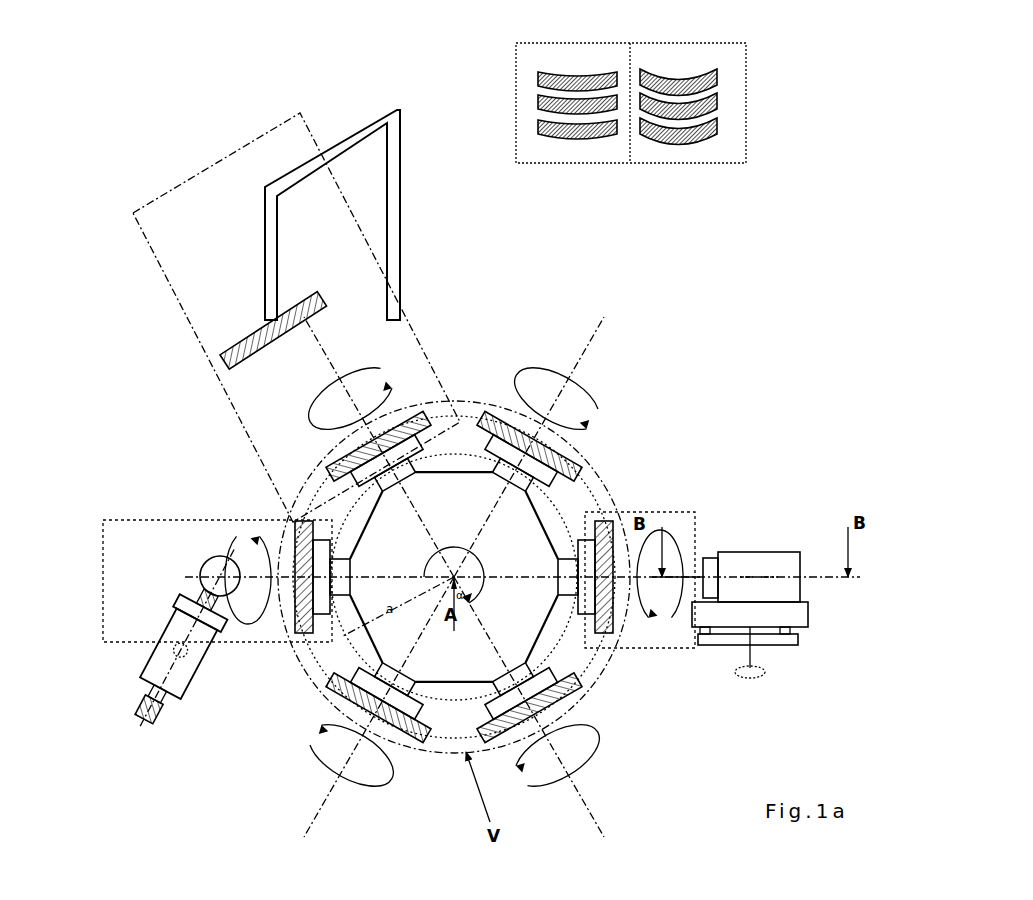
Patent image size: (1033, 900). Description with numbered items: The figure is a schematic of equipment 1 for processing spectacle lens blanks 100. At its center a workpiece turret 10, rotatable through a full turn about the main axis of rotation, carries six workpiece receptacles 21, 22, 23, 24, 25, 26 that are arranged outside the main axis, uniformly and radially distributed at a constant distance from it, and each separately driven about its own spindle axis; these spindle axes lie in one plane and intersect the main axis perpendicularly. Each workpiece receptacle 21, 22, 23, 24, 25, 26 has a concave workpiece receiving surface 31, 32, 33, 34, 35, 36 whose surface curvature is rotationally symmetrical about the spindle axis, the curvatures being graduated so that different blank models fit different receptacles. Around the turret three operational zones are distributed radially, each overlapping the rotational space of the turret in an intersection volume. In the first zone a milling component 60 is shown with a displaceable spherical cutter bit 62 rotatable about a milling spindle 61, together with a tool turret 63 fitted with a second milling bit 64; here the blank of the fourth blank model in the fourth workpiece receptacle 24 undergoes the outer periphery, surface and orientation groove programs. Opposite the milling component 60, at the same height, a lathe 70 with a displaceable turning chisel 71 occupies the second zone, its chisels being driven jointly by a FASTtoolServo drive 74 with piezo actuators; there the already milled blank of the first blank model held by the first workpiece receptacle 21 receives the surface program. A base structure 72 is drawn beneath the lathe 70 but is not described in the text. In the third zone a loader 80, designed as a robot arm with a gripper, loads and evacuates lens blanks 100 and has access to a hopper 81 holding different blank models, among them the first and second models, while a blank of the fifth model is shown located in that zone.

The equipment 1 is at (218, 93).
The workpiece turret 10 is at (583, 462).
The first workpiece receptacle 21 is at (568, 577).
The second workpiece receptacle 22 is at (513, 679).
The third workpiece receptacle 23 is at (395, 679).
The fourth workpiece receptacle 24 is at (340, 577).
The fifth workpiece receptacle 25 is at (395, 474).
The sixth workpiece receptacle 26 is at (513, 474).
The workpiece receiving surface 31 is at (586, 577).
The workpiece receiving surface 32 is at (521, 694).
The workpiece receiving surface 33 is at (386, 694).
The workpiece receiving surface 34 is at (321, 577).
The workpiece receiving surface 35 is at (386, 461).
The workpiece receiving surface 36 is at (521, 461).
The milling component 60 is at (171, 647).
The milling spindle 61 is at (182, 647).
The spherical cutter bit 62 is at (206, 562).
The tool turret 63 is at (180, 650).
The second milling bit 64 is at (149, 709).
The lathe 70 is at (780, 550).
The turning chisel 71 is at (714, 558).
The base plate 72 is at (770, 641).
The FASTtoolServo drive 74 is at (800, 620).
The loader 80 is at (400, 148).
The hopper 81 is at (750, 80).
The lens blank 100 is at (225, 340).